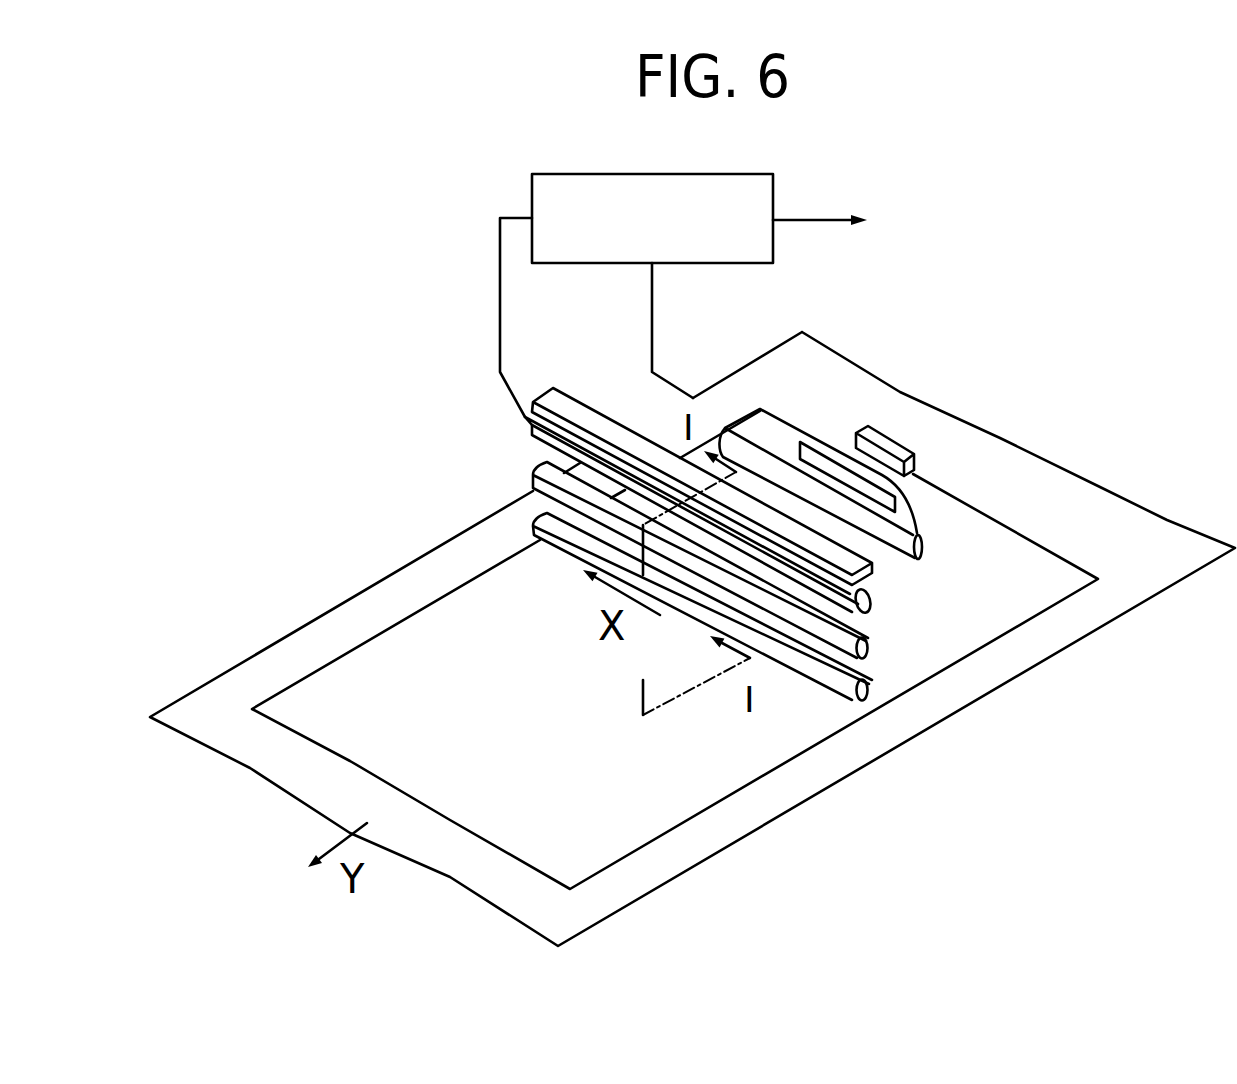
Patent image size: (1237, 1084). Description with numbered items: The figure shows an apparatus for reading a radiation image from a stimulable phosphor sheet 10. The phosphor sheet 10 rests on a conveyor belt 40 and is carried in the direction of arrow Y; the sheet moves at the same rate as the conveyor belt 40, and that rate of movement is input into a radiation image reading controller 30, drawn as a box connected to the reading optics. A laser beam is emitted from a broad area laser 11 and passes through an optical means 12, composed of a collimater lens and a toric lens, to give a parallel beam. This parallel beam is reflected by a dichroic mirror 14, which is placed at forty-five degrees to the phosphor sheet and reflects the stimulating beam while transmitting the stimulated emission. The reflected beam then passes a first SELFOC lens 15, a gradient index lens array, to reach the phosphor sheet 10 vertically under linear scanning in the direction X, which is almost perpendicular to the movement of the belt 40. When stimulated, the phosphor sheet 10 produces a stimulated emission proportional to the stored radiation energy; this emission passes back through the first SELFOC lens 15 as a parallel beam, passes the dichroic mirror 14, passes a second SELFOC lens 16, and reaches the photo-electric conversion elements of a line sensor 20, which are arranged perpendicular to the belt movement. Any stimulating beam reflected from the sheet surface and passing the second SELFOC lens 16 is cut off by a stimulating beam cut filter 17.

The stimulable phosphor sheet 10 is at (667, 818).
The broad area laser 11 is at (893, 436).
The optical means 12 is at (929, 577).
The dichroic mirror 14 is at (535, 476).
The first SELFOC lens 15 is at (528, 497).
The second SELFOC lens 16 is at (871, 591).
The stimulating beam cut filter 17 is at (870, 581).
The line sensor 20 is at (583, 410).
The radiation image reading controller 30 is at (775, 197).
The conveyor belt 40 is at (1017, 437).